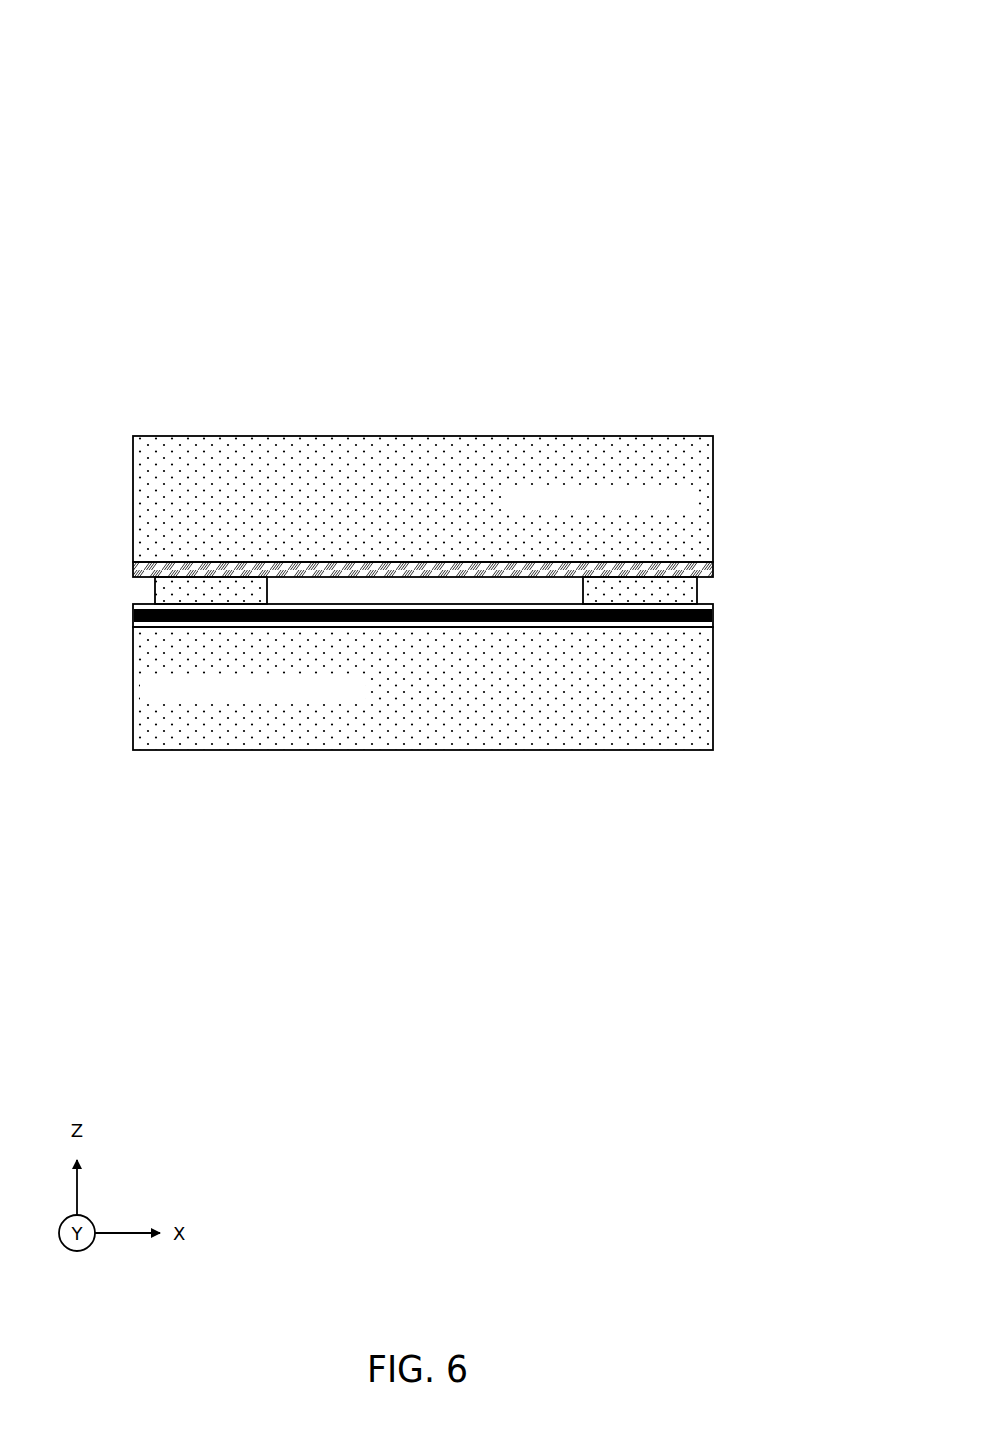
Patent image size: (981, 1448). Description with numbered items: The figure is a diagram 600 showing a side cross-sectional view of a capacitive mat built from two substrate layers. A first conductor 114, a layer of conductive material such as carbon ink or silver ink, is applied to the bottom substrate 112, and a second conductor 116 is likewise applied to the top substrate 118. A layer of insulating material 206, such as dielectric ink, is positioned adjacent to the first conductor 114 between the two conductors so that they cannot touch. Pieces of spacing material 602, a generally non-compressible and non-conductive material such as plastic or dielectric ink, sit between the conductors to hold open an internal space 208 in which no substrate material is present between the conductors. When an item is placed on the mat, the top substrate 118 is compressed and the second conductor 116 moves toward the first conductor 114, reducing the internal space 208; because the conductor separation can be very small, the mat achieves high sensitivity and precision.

The diagram 600 is at (829, 54).
The top substrate 118 is at (423, 499).
The second conductor 116 is at (308, 567).
The spacing material 602 is at (793, 483).
The insulating material 206 is at (705, 605).
The first conductor 114 is at (417, 617).
The bottom substrate 112 is at (423, 688).
The internal space 208 is at (572, 603).